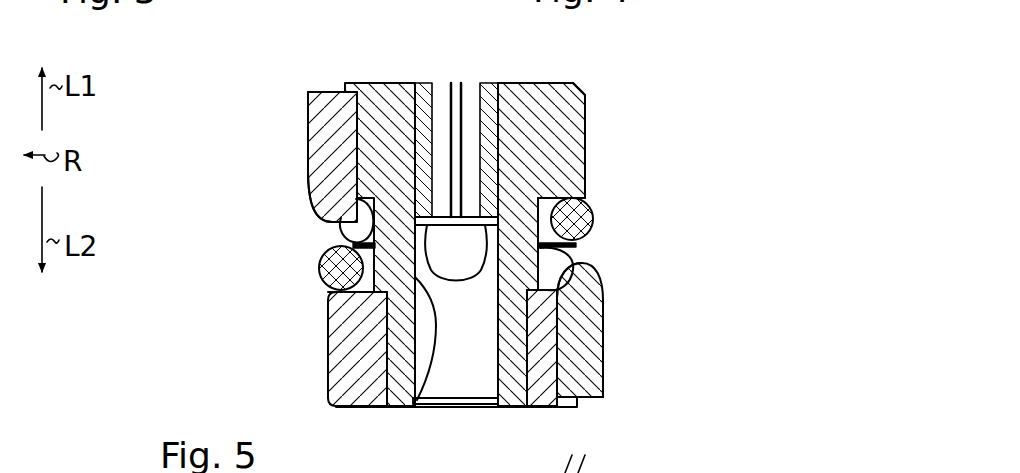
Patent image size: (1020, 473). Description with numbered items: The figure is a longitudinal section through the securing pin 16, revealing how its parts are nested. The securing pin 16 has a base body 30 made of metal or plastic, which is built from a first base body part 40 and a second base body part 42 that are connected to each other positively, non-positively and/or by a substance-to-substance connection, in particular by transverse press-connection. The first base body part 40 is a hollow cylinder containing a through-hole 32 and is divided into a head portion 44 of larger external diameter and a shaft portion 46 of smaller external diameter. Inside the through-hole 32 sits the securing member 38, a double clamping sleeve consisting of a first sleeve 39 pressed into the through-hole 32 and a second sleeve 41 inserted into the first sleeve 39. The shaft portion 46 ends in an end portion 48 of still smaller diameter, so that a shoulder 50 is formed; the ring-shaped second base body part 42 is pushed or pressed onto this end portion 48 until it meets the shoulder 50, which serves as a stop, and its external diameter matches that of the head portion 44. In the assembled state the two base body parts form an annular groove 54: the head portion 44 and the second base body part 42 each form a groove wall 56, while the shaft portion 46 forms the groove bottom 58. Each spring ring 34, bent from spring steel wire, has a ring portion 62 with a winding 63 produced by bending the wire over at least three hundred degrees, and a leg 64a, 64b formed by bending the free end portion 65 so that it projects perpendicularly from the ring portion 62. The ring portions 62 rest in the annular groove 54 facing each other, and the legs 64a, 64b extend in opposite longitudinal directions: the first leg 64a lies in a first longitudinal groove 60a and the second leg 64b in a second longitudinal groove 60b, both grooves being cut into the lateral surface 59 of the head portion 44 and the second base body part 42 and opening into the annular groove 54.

The securing pin 16 is at (459, 203).
The base body 30 is at (616, 148).
The through-hole 32 is at (497, 350).
The spring ring 34 is at (593, 203).
The securing member 38 is at (434, 78).
The first sleeve 39 is at (498, 82).
The first base body part 40 is at (590, 172).
The second sleeve 41 is at (473, 118).
The second base body part 42 is at (324, 342).
The head portion 44 is at (585, 110).
The shaft portion 46 is at (606, 307).
The end portion 48 is at (593, 370).
The shoulder 50 is at (320, 290).
The annular groove 54 is at (415, 402).
The groove wall 56 is at (593, 228).
The groove bottom 58 is at (593, 245).
The lateral surface 59 is at (585, 132).
The first longitudinal groove 60a is at (354, 88).
The second longitudinal groove 60b is at (603, 397).
The ring portion 62 is at (587, 190).
The winding 63 is at (553, 200).
The first leg 64a is at (309, 108).
The second leg 64b is at (603, 332).
The free end portion 65 is at (310, 150).